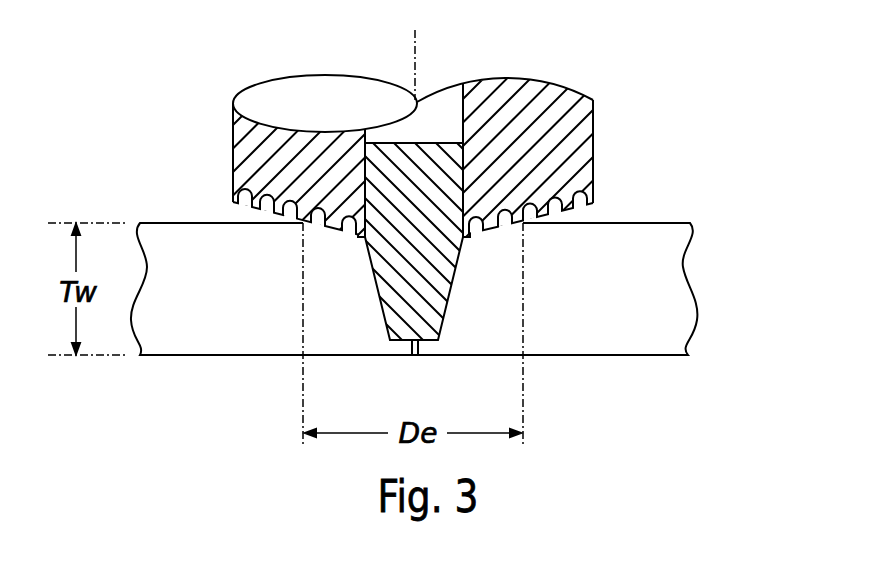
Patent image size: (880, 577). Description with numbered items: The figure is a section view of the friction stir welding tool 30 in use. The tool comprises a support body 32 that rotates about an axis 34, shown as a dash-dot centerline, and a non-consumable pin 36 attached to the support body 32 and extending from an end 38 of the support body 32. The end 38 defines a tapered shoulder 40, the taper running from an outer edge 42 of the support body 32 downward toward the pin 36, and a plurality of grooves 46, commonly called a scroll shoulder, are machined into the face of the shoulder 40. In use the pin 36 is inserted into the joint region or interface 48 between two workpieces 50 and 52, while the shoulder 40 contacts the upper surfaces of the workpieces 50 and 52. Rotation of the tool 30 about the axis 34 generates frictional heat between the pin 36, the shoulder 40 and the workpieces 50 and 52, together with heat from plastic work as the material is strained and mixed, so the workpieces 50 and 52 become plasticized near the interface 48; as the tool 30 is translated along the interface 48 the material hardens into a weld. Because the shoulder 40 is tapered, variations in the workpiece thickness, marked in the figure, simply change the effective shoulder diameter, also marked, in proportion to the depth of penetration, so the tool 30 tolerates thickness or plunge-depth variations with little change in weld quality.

The friction stir welding tool 30 is at (626, 94).
The support body 32 is at (537, 82).
The axis 34 is at (416, 45).
The non-consumable pin 36 is at (390, 147).
The end of the support body 38 is at (606, 189).
The shoulder 40 is at (568, 208).
The outer edge of the support body 42 is at (228, 122).
The grooves 46 is at (238, 208).
The joint region (interface) 48 is at (415, 357).
The workpiece 50 is at (160, 341).
The workpiece 52 is at (621, 341).